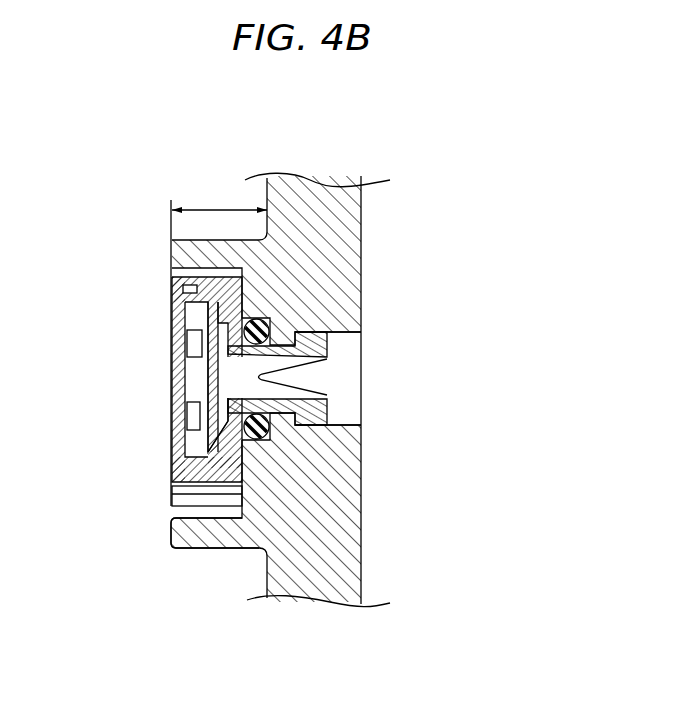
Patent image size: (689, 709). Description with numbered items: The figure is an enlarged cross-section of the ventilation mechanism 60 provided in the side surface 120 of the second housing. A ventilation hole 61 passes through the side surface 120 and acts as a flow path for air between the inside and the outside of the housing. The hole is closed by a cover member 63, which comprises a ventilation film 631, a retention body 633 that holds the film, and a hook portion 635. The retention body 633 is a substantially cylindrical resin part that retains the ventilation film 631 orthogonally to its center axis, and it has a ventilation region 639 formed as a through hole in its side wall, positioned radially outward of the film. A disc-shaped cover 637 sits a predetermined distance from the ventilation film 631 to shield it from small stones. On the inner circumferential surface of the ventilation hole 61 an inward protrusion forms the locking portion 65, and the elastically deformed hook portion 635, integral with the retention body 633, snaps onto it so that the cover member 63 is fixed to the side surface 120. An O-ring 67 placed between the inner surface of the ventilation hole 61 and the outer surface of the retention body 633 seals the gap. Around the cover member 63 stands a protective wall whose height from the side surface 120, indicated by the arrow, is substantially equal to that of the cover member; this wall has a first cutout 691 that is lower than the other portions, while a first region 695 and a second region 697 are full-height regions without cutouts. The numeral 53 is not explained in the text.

The ventilation mechanism 60 is at (465, 166).
The side surface 120 is at (352, 204).
The second region 697 is at (208, 240).
The cover member 63 is at (137, 393).
The ventilation film 631 is at (190, 362).
The cover 637 is at (182, 392).
The ventilation region 639 is at (190, 416).
The retention body 633 is at (220, 478).
The locking portion 65 is at (283, 338).
The hook portion 635 is at (327, 356).
The ventilation hole 61 is at (373, 398).
The O-ring 67 is at (275, 323).
The first cutout 691 is at (222, 497).
The retaining portion 53 is at (170, 530).
The first region 695 is at (186, 506).